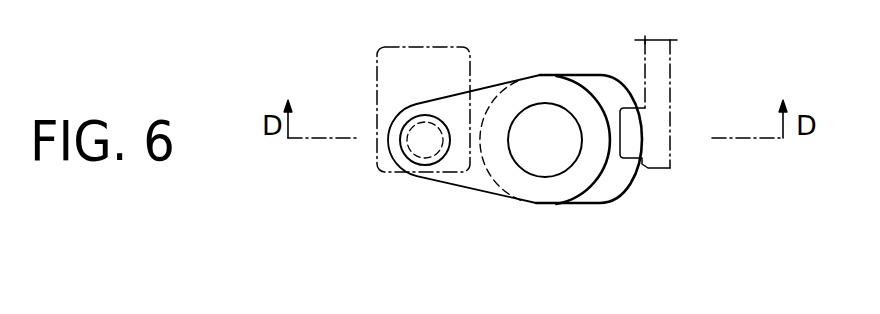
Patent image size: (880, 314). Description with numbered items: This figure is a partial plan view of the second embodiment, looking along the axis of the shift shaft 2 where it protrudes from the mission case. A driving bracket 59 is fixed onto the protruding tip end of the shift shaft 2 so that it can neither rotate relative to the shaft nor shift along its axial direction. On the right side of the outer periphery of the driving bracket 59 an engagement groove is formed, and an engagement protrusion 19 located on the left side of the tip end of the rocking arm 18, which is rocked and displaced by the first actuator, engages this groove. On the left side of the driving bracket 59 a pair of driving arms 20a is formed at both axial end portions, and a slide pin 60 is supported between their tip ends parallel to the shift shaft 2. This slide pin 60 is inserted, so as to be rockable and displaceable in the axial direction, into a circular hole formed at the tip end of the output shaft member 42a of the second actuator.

The shift shaft 2 is at (538, 118).
The rocking arm 18 is at (660, 168).
The engagement protrusion 19 is at (627, 160).
The driving arm 20a is at (478, 180).
The output shaft member 42a is at (376, 84).
The driving bracket 59 is at (580, 180).
The slide pin 60 is at (425, 148).